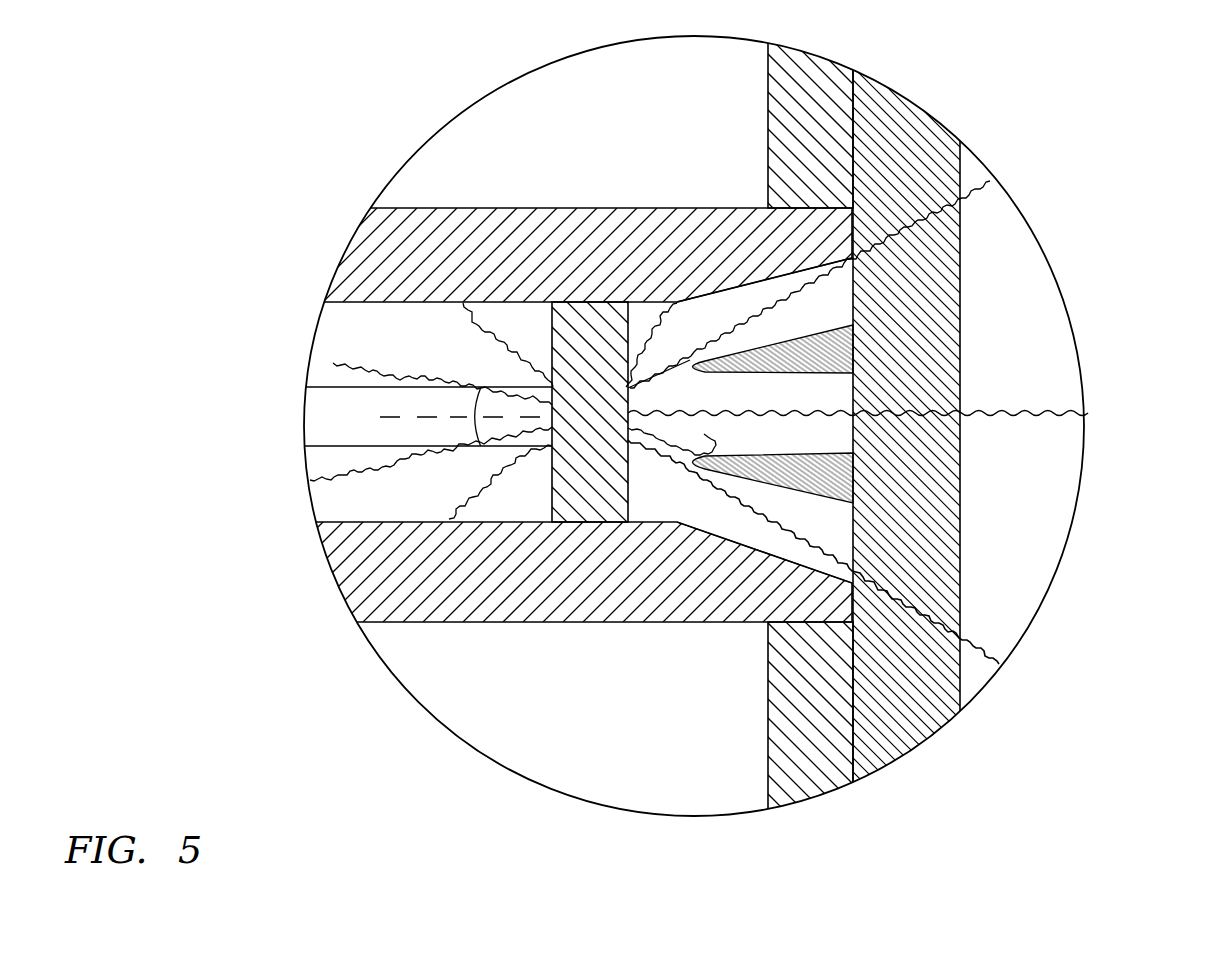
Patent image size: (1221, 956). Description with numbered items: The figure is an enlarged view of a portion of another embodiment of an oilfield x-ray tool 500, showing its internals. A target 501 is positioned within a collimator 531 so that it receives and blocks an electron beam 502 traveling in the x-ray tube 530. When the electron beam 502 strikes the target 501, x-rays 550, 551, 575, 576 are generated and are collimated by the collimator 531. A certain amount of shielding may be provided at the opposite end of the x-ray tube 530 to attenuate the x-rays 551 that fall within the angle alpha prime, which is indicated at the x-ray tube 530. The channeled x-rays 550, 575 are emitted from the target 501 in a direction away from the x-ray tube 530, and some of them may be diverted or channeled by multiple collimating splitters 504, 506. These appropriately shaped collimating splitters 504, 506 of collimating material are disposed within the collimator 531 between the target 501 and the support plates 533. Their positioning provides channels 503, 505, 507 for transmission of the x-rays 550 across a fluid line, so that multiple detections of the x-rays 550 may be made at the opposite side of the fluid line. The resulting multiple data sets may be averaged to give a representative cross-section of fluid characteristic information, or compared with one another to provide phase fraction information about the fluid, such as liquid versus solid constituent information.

The oilfield x-ray tool 500 is at (490, 138).
The target 501 is at (503, 606).
The electron beam 502 is at (393, 417).
The channel 503 is at (742, 530).
The collimating splitter 504 is at (833, 474).
The channel 505 is at (733, 403).
The collimating splitter 506 is at (835, 355).
The channel 507 is at (754, 313).
The x-ray tube 530 is at (318, 422).
The collimator 531 is at (590, 506).
The support plates 533 is at (810, 88).
The x-rays 550 is at (960, 196).
The x-rays 551 is at (333, 363).
The x-rays 575 is at (657, 307).
The x-rays 576 is at (477, 329).